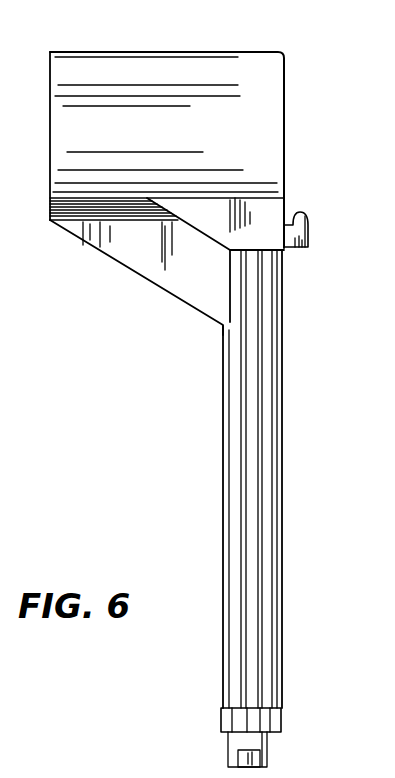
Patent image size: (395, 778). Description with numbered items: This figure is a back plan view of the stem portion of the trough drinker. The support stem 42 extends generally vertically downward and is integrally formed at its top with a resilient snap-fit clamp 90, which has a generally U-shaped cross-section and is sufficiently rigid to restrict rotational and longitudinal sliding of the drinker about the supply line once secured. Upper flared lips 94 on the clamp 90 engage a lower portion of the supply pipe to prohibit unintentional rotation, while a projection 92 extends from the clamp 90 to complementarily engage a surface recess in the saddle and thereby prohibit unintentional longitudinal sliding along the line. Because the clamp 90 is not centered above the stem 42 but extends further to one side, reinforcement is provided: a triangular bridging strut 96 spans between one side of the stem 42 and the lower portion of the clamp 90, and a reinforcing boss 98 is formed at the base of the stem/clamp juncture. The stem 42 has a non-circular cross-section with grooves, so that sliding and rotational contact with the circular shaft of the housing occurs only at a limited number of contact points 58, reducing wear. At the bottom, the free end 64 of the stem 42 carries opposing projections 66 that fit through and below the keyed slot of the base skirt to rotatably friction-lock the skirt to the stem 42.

The snap-fit clamp 90 is at (70, 128).
The upper flared lips 94 is at (197, 53).
The triangular bridging strut 96 is at (127, 252).
The reinforcing boss 98 is at (256, 226).
The projection 92 is at (310, 223).
The contact points 58 is at (222, 549).
The support stem 42 is at (255, 457).
The free end 64 is at (240, 741).
The opposing projections 66 is at (255, 758).